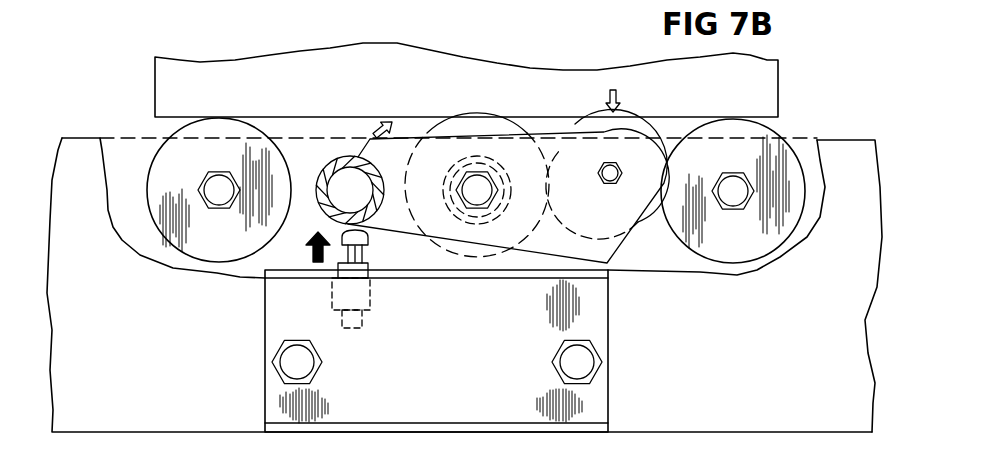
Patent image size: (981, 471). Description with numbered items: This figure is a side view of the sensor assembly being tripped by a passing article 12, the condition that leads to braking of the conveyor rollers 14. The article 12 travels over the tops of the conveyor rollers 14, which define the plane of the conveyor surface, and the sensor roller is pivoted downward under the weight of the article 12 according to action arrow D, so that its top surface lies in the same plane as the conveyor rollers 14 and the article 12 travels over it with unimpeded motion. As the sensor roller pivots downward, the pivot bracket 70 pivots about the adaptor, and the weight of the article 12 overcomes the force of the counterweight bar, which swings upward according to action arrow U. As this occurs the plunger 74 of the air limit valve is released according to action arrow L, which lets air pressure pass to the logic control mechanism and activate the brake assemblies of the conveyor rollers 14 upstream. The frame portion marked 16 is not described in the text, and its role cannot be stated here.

The article 12 is at (197, 87).
The conveyor rollers 14 is at (763, 147).
The base frame 16 is at (767, 334).
The pivot bracket 70 is at (563, 238).
The plunger 74 is at (366, 240).
The action arrow U is at (373, 135).
The action arrow D is at (607, 95).
The action arrow L is at (312, 250).